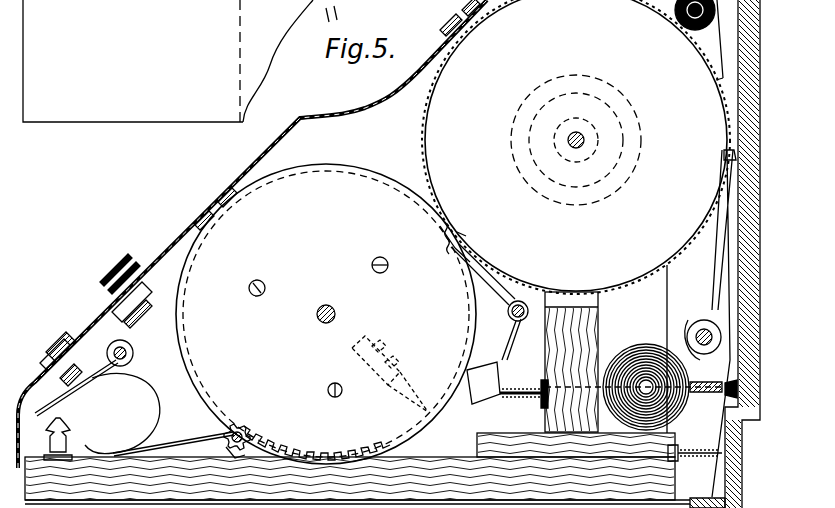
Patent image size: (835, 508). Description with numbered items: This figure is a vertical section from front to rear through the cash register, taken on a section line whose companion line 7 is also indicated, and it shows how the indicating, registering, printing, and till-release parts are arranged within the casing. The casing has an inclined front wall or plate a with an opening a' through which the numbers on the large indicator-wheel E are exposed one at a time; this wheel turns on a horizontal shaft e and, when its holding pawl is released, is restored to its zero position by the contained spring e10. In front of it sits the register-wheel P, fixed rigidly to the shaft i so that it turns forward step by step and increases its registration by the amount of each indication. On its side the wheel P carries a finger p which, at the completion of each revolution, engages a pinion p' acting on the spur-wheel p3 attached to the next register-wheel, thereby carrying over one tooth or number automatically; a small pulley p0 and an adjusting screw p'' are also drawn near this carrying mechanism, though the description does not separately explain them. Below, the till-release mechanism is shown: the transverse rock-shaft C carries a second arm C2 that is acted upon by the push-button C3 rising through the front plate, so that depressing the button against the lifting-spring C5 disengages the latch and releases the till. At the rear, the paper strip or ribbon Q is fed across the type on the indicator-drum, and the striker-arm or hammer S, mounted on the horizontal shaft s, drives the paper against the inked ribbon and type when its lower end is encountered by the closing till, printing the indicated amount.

The section line 7 7 is at (203, 133).
The inclined front wall or plate a is at (252, 234).
The opening in the front plate a' is at (458, 18).
The transverse rock-shaft C is at (133, 353).
The second arm C2 is at (80, 386).
The push-button C3 is at (50, 360).
The lifting-spring C5 is at (159, 408).
The register-wheel P is at (326, 314).
The shaft i is at (335, 314).
The finger p is at (390, 374).
The pinion p' is at (250, 430).
The spur-wheel p3 is at (300, 448).
The pulley p0 is at (498, 284).
The adjusting screw p'' is at (507, 363).
The indicator-wheel E is at (576, 147).
The horizontal shaft e is at (582, 141).
The contained spring e10 is at (636, 162).
The paper strip or ribbon Q is at (726, 248).
The striker-arm or hammer S is at (716, 288).
The horizontal shaft s is at (690, 328).